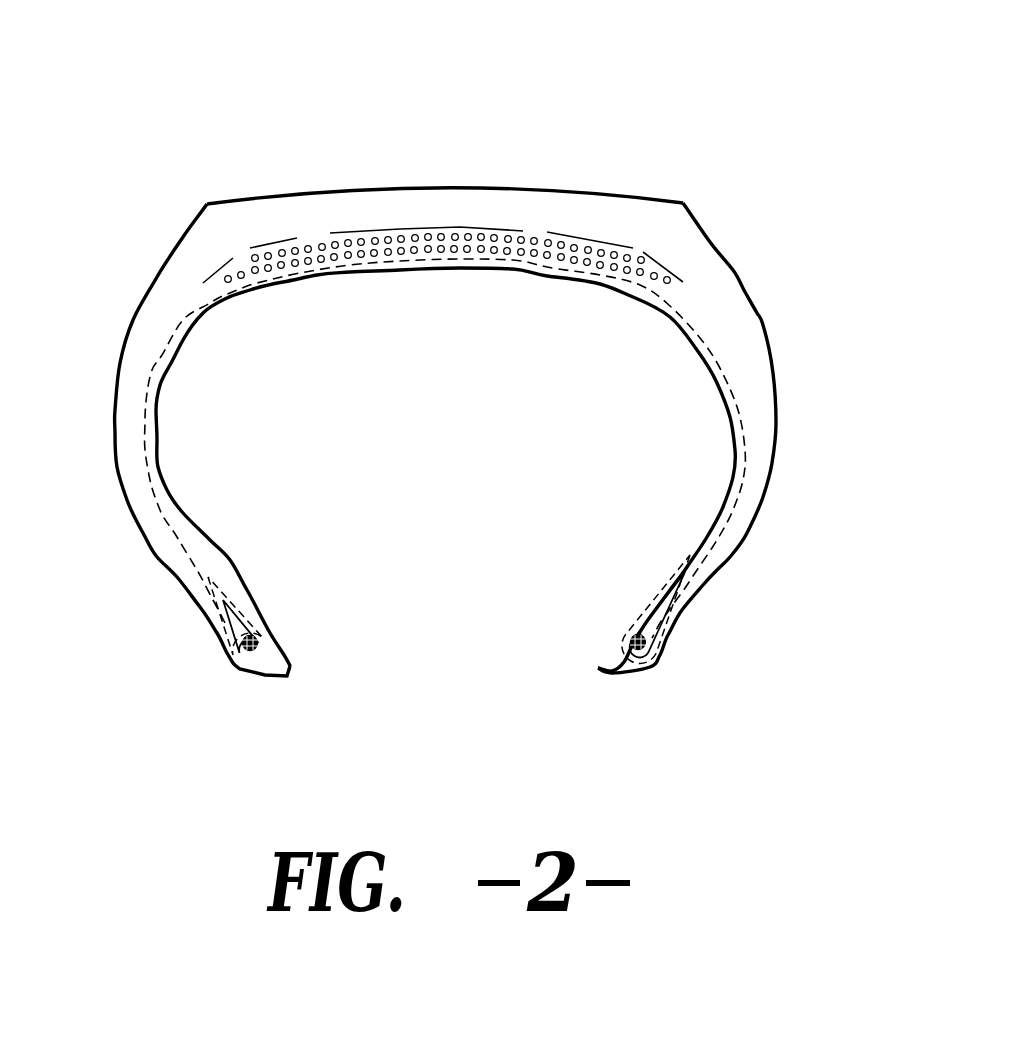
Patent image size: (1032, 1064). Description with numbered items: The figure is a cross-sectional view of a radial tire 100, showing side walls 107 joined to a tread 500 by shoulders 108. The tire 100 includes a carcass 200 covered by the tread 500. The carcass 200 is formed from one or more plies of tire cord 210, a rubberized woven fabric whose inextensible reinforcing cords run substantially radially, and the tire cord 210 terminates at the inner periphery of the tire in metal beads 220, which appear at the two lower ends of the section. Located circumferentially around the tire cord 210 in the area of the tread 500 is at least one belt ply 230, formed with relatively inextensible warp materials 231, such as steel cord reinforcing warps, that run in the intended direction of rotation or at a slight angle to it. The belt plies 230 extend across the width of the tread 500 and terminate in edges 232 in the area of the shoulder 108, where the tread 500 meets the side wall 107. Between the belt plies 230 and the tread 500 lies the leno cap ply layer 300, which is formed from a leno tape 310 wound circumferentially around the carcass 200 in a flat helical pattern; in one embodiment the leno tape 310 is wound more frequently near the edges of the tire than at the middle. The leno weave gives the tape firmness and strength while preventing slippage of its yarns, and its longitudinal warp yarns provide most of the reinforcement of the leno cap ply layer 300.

The tire 100 is at (175, 120).
The side wall 107 is at (743, 540).
The shoulder 108 is at (660, 225).
The carcass 200 is at (768, 322).
The tire cord 210 is at (740, 410).
The metal bead 220 is at (247, 650).
The belt ply 230 is at (333, 250).
The inextensible warp material 231 is at (415, 240).
The edge 232 is at (228, 283).
The leno cap ply layer 300 is at (205, 268).
The leno tape 310 is at (297, 243).
The tread 500 is at (567, 205).